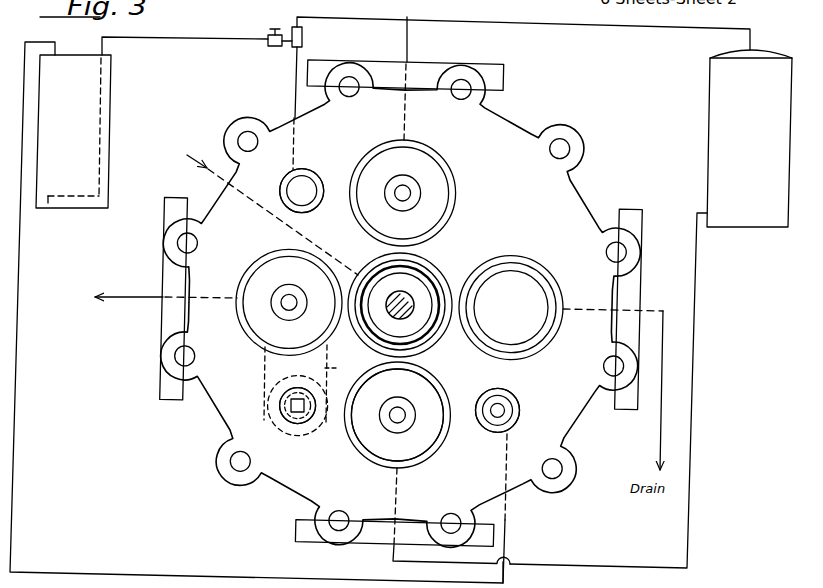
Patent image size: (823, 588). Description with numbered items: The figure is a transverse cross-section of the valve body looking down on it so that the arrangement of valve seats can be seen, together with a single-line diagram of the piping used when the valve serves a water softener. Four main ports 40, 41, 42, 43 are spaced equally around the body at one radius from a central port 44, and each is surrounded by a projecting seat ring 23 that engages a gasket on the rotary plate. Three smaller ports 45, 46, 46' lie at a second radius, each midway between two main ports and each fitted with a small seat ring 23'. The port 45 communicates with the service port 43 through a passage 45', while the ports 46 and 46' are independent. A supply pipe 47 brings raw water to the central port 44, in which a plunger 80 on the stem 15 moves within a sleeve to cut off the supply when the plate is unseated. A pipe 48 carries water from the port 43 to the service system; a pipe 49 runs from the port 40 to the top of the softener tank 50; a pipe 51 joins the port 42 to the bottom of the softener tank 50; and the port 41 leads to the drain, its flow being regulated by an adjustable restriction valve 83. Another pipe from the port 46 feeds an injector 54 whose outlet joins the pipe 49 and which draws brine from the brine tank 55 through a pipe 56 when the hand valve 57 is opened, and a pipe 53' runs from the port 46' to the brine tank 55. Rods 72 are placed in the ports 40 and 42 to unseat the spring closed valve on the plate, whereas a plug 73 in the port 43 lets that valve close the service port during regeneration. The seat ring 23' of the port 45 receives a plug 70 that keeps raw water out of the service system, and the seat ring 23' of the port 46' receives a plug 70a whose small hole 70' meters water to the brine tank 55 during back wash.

The stem 15 is at (407, 293).
The seat ring 23 is at (413, 415).
The small seat ring 23' is at (400, 295).
The port 40 is at (420, 163).
The port 41 is at (525, 332).
The port 42 is at (370, 445).
The port 43 is at (268, 330).
The central port 44 is at (413, 322).
The port 45 is at (300, 398).
The passage 45' is at (342, 358).
The port 46 is at (305, 205).
The port 46' is at (518, 410).
The supply pipe 47 is at (212, 179).
The pipe 48 is at (115, 293).
The pipe 49 is at (408, 42).
The softener tank 50 is at (713, 138).
The pipe 51 is at (407, 565).
The pipe 53' is at (428, 531).
The injector 54 is at (303, 34).
The brine tank 55 is at (110, 107).
The pipe 56 is at (103, 50).
The hand valve 57 is at (276, 47).
The plug 70 is at (267, 401).
The small hole 70' is at (525, 401).
The plug 70a is at (483, 420).
The rod 72 is at (405, 192).
The plug 73 is at (288, 308).
The plunger 80 is at (383, 282).
The adjustable restriction valve 83 is at (522, 275).